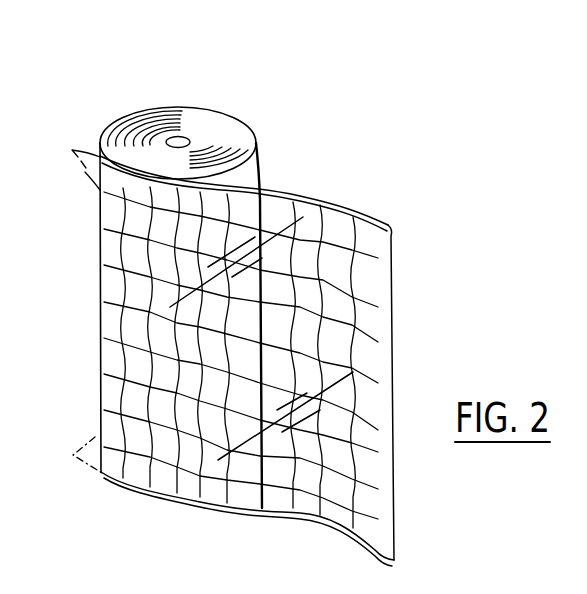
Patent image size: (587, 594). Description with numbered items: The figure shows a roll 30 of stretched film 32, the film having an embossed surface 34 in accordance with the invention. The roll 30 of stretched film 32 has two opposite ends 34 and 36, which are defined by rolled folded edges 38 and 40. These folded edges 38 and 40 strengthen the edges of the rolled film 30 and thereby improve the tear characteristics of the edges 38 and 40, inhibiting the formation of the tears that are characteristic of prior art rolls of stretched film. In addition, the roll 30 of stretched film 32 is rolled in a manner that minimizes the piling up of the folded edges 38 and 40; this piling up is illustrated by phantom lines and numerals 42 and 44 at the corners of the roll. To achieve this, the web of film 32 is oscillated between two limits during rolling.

The roll 30 is at (250, 80).
The stretched film 32 is at (364, 189).
The embossed surface 34 is at (350, 302).
The end 36 is at (178, 506).
The folded edge 38 is at (285, 188).
The folded edge 40 is at (284, 494).
The piling up of the folded edges 42 is at (85, 172).
The piling up of the folded edges 44 is at (94, 439).